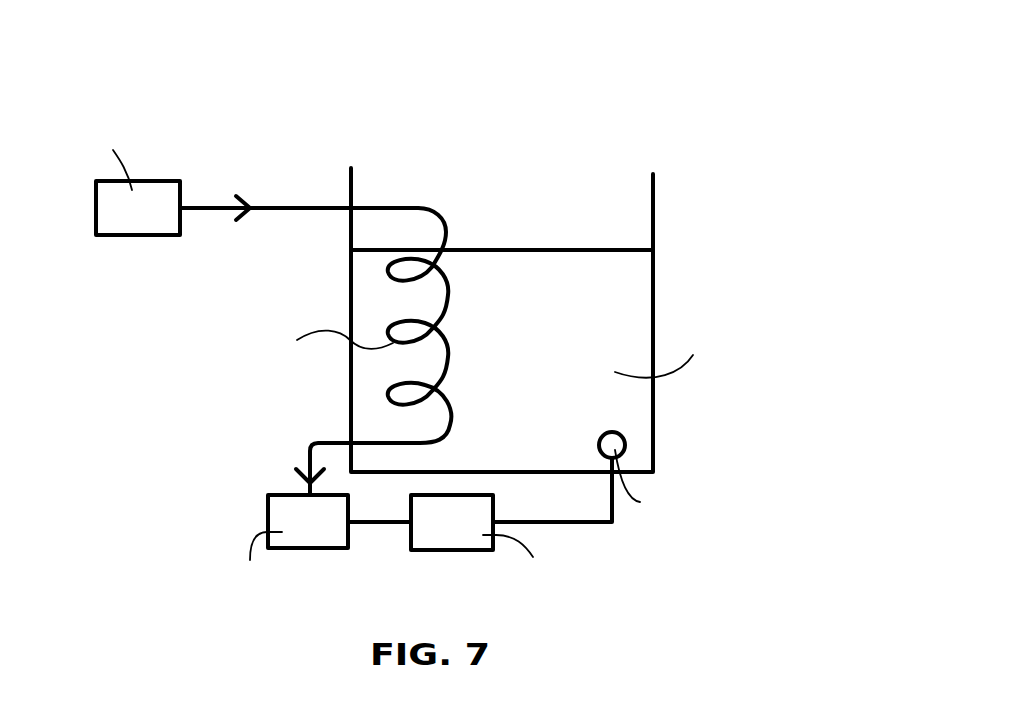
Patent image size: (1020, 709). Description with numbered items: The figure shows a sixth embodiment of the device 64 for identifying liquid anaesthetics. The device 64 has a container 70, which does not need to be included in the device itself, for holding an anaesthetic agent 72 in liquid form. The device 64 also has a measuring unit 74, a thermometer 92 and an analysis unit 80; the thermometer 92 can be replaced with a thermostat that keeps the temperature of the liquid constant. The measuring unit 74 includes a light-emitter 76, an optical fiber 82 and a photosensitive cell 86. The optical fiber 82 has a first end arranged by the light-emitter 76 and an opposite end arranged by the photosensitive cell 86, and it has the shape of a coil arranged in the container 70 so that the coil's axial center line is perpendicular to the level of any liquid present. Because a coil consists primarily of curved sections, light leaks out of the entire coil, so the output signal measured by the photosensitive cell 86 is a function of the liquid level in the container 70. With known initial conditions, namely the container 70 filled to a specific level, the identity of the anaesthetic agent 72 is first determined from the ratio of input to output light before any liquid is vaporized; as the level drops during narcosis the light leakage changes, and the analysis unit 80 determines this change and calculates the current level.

The device 64 is at (502, 124).
The container 70 is at (655, 187).
The anaesthetic agent 72 is at (627, 277).
The measuring unit 74 is at (294, 162).
The light-emitter 76 is at (116, 165).
The analysis unit 80 is at (524, 559).
The optical fiber 82 is at (417, 208).
The photosensitive cell 86 is at (302, 575).
The thermometer 92 is at (627, 440).